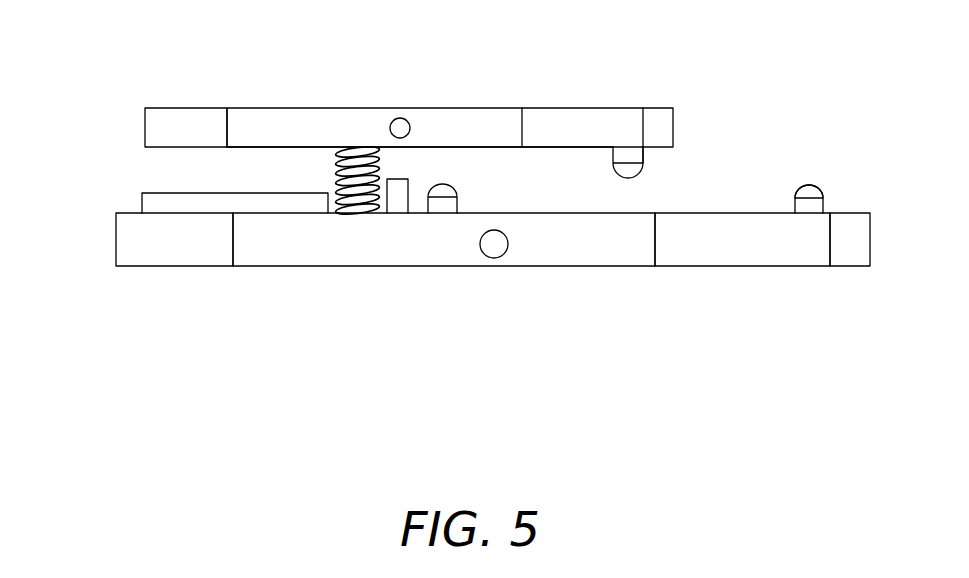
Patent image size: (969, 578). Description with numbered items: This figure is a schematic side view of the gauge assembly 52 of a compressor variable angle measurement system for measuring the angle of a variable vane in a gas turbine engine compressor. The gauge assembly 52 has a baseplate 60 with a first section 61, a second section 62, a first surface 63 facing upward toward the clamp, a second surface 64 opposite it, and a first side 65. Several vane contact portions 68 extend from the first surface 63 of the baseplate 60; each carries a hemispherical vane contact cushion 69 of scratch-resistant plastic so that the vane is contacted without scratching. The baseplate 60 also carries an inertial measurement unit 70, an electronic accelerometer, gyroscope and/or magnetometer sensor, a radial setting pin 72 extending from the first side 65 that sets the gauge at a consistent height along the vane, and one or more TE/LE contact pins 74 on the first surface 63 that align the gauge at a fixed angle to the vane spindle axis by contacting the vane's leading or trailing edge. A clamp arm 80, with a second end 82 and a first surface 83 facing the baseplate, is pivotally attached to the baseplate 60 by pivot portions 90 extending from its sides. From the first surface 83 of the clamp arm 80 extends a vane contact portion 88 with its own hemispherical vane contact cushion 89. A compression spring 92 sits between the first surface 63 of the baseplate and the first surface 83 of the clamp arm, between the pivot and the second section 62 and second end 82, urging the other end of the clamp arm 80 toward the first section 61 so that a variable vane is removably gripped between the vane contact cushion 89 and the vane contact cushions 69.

The gauge assembly 52 is at (140, 56).
The baseplate 60 is at (797, 280).
The first section 61 is at (886, 233).
The second section 62 is at (95, 238).
The first surface 63 is at (755, 213).
The second surface 64 is at (140, 266).
The first side 65 is at (628, 253).
The vane contact portions 68 is at (466, 186).
The vane contact cushion 69 is at (823, 190).
The inertial measurement unit 70 is at (210, 200).
The radial setting pin 72 is at (488, 258).
The TE/LE contact pins 74 is at (398, 202).
The clamp arm 80 is at (573, 96).
The second end 82 is at (110, 128).
The first surface 83 is at (267, 147).
The vane contact portion 88 is at (663, 167).
The vane contact cushion 89 is at (622, 175).
The pivot portions 90 is at (390, 119).
The spring 92 is at (352, 206).